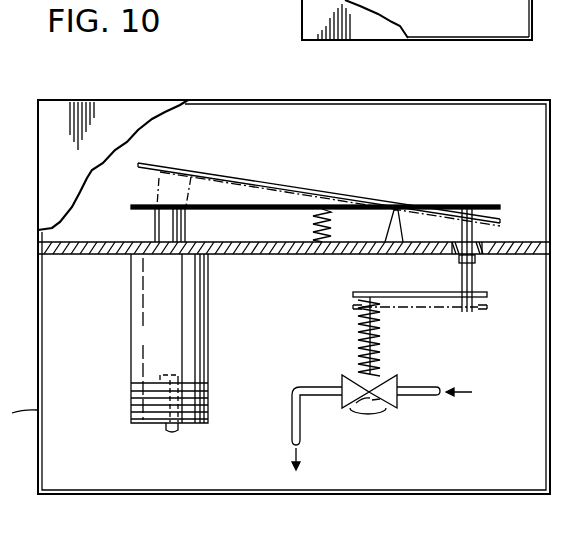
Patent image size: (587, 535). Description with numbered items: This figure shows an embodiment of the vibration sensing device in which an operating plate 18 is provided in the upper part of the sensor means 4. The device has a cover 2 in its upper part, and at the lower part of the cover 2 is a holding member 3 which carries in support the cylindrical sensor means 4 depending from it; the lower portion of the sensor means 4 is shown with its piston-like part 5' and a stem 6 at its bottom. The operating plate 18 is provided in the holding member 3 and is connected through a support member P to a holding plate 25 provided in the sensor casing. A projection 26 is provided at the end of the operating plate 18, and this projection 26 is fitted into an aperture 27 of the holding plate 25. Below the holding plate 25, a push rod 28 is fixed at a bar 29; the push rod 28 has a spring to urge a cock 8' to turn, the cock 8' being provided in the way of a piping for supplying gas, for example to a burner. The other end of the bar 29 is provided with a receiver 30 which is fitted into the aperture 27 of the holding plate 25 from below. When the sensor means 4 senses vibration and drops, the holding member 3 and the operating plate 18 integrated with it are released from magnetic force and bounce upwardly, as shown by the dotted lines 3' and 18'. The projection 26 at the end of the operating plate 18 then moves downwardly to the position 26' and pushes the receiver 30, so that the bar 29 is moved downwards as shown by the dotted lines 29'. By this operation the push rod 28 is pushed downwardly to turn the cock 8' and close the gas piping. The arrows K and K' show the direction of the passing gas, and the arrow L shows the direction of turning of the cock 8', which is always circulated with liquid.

The cover 2 is at (232, 100).
The holding plate 25 is at (288, 258).
The operating plate 18 is at (315, 221).
The operating plate raised position 18' is at (319, 188).
The holding member 3 is at (145, 225).
The holding member raised position 3' is at (150, 190).
The support member P is at (390, 231).
The projection 26 is at (496, 260).
The projection lowered position 26' is at (443, 261).
The aperture 27 is at (476, 258).
The receiver 30 is at (478, 285).
The bar 29 is at (405, 284).
The bar lowered position 29' is at (420, 317).
The push rod 28 is at (362, 346).
The cock 8' is at (382, 403).
The direction of turning of the cock L is at (363, 431).
The direction of passing gas K is at (470, 393).
The direction of passing gas K' is at (306, 465).
The sensor means 4 is at (131, 332).
The piston 5' is at (187, 397).
The stem 6 is at (166, 428).